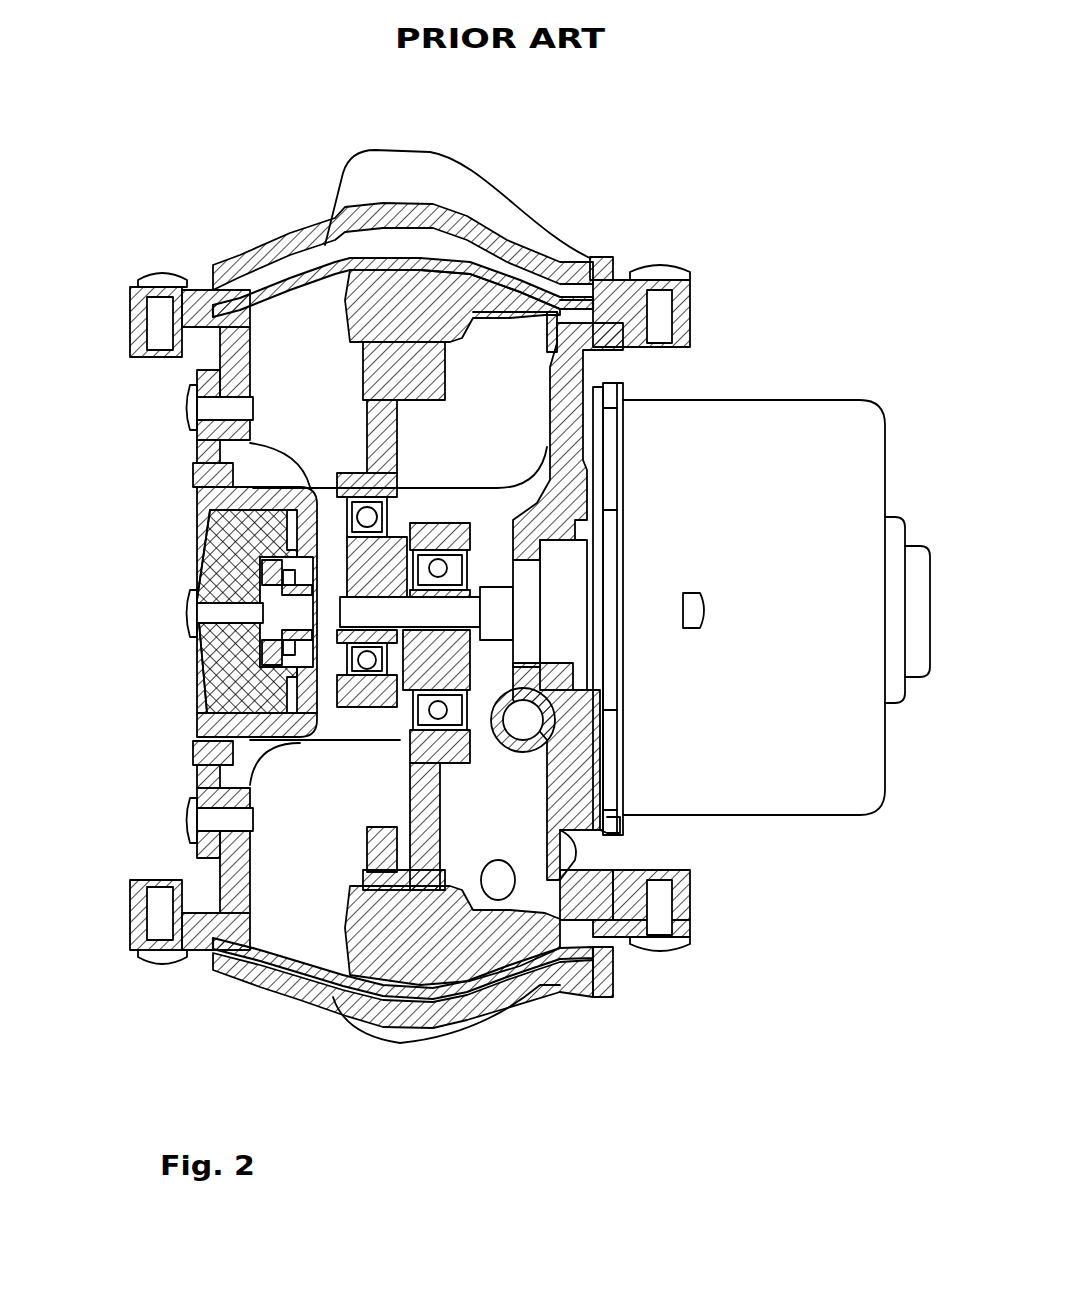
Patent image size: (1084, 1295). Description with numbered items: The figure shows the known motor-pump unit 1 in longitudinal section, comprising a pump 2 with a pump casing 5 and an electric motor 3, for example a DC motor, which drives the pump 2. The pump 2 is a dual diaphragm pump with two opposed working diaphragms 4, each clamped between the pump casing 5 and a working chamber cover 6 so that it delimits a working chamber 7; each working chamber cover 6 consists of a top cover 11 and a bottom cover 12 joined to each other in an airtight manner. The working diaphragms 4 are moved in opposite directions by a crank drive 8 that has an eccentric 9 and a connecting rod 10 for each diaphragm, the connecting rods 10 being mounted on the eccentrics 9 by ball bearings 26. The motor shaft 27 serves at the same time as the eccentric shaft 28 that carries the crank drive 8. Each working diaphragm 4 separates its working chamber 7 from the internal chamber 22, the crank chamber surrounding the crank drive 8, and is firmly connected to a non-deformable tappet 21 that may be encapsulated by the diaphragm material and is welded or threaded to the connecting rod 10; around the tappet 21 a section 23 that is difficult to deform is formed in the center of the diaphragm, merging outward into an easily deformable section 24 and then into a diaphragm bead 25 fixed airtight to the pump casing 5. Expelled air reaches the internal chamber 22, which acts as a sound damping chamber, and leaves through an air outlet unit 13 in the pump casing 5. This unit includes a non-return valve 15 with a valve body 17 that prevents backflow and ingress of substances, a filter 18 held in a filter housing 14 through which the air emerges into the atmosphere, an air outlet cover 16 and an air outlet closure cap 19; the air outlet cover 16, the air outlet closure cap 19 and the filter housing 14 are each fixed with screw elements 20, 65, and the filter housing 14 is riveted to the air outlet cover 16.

The motor-pump unit 1 is at (795, 178).
The pump 2 is at (165, 245).
The electric motor 3 is at (795, 425).
The working diaphragm 4 is at (535, 965).
The pump casing 5 is at (565, 850).
The working chamber cover 6 is at (600, 255).
The working chamber 7 is at (405, 975).
The crank drive 8 is at (420, 515).
The eccentric 9 is at (352, 562).
The connecting rod 10 is at (455, 405).
The top cover 11 is at (585, 268).
The bottom cover 12 is at (520, 262).
The air outlet unit 13 is at (195, 680).
The filter housing 14 is at (230, 722).
The non-return valve 15 is at (225, 553).
The air outlet cover 16 is at (215, 765).
The valve body 17 is at (260, 590).
The filter 18 is at (215, 520).
The air outlet closure cap 19 is at (240, 650).
The screw element 20 is at (215, 810).
The tappet 21 is at (465, 250).
The internal chamber 22 is at (300, 852).
The section that is difficult to deform 23 is at (395, 245).
The easily deformable section 24 is at (277, 305).
The diaphragm bead 25 is at (228, 305).
The ball bearing 26 is at (365, 665).
The motor shaft 27 is at (525, 605).
The eccentric shaft 28 is at (470, 613).
The screw element 65 is at (260, 612).